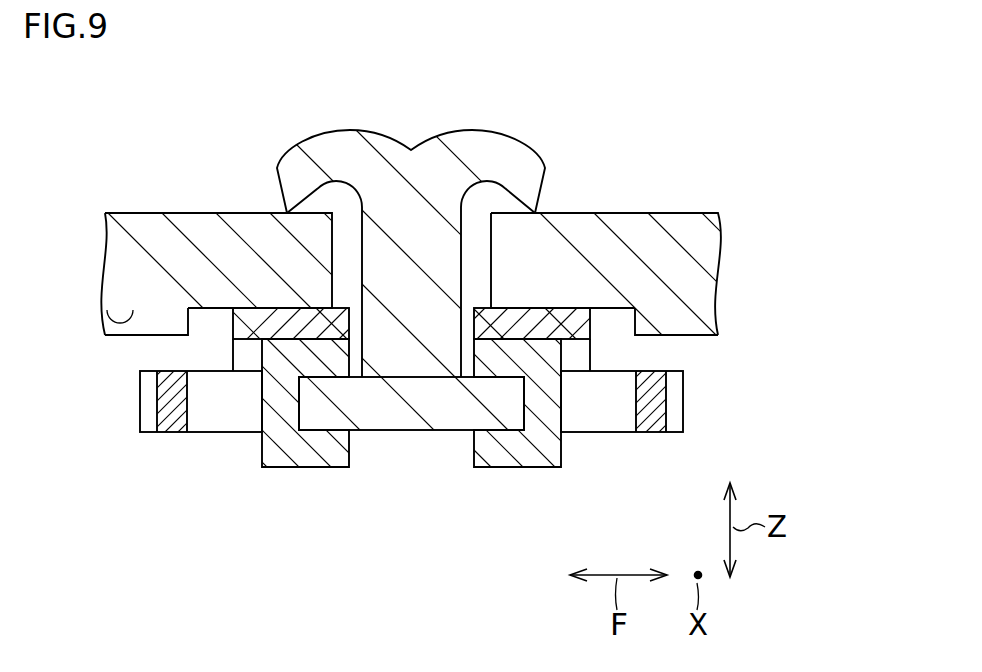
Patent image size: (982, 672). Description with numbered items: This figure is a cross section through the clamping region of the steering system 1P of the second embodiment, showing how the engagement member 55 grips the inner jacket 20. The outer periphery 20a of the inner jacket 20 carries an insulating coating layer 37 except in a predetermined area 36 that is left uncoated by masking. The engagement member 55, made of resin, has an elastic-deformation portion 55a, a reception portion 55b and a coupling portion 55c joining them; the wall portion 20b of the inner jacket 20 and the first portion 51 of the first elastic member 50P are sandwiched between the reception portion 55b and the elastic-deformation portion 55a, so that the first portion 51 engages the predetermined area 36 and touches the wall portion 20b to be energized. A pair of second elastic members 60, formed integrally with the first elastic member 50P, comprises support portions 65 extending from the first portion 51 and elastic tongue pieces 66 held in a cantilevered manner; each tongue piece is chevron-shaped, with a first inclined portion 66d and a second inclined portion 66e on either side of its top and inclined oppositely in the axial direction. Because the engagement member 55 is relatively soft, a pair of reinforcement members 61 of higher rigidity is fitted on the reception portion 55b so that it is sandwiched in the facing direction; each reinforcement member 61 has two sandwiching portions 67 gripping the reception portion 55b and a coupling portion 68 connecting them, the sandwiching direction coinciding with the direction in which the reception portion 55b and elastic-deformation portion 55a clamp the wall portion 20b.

The steering system 1P is at (433, 588).
The inner jacket 20 is at (683, 267).
The outer periphery 20a is at (104, 322).
The wall portion 20b is at (146, 226).
The predetermined area 36 is at (207, 318).
The insulating coating layer 37 is at (692, 337).
The first elastic member 50P is at (266, 307).
The first portion 51 is at (291, 318).
The engagement member 55 is at (480, 133).
The elastic-deformation portion 55a is at (537, 160).
The reception portion 55b is at (432, 405).
The coupling portion 55c is at (410, 352).
The second elastic members 60 is at (140, 388).
The reinforcement members 61 is at (274, 470).
The support portions 65 is at (242, 353).
The elastic tongue pieces 66 is at (153, 416).
The first inclined portion 66d is at (208, 420).
The second inclined portion 66e is at (170, 418).
The sandwiching portions 67 is at (330, 450).
The coupling portion 68 is at (270, 408).